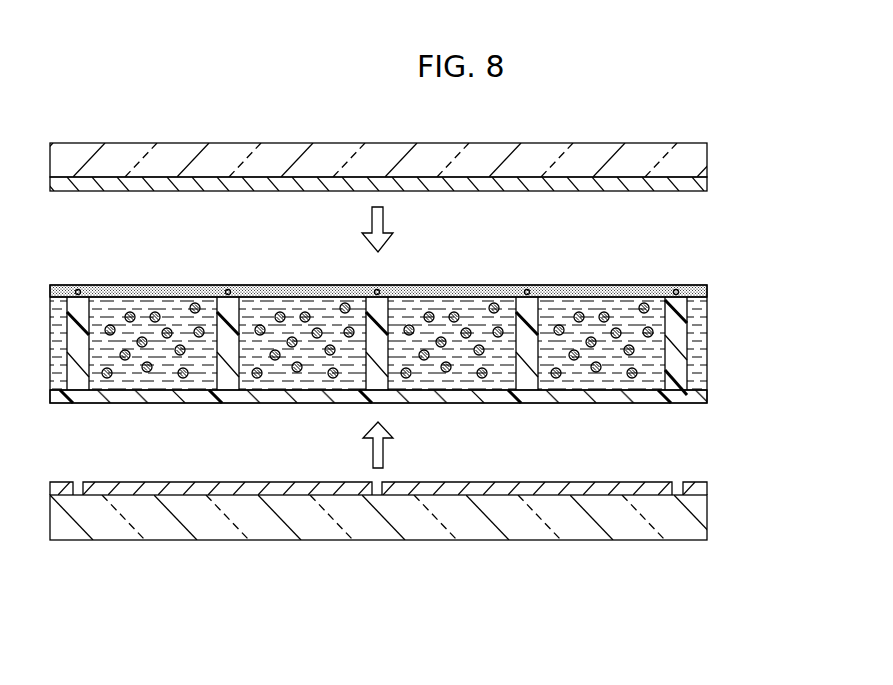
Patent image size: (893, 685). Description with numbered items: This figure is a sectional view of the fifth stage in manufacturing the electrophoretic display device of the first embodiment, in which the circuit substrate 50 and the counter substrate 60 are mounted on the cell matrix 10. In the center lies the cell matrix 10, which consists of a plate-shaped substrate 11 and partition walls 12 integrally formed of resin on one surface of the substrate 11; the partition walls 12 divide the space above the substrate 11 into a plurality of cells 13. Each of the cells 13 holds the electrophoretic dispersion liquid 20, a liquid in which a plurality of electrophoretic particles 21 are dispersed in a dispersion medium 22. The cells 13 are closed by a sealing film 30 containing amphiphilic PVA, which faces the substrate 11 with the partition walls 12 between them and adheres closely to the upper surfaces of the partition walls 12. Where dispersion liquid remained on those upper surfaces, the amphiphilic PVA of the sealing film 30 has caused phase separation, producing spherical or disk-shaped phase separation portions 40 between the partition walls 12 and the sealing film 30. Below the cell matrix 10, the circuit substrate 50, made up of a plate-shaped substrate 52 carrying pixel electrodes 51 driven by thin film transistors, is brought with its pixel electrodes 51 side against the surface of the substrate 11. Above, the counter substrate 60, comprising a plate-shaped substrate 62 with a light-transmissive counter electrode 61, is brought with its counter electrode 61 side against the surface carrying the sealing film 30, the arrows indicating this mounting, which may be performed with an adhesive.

The cell matrix 10 is at (430, 303).
The substrate 11 is at (672, 398).
The partition walls 12 is at (672, 333).
The cells 13 is at (378, 294).
The electrophoretic dispersion liquid 20 is at (378, 294).
The electrophoretic particles 21 is at (604, 311).
The dispersion medium 22 is at (628, 315).
The sealing film 30 is at (707, 288).
The phase separation portions 40 is at (228, 289).
The circuit substrate 50 is at (425, 517).
The pixel electrodes 51 is at (668, 490).
The substrate 52 is at (684, 525).
The counter substrate 60 is at (425, 168).
The counter electrode 61 is at (399, 181).
The substrate 62 is at (700, 157).